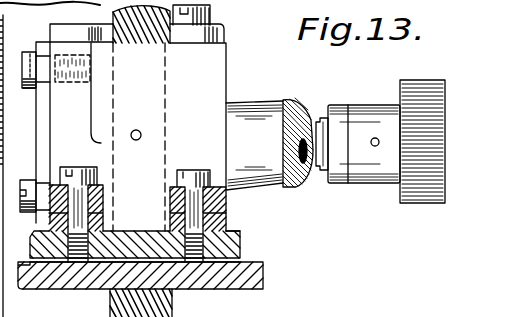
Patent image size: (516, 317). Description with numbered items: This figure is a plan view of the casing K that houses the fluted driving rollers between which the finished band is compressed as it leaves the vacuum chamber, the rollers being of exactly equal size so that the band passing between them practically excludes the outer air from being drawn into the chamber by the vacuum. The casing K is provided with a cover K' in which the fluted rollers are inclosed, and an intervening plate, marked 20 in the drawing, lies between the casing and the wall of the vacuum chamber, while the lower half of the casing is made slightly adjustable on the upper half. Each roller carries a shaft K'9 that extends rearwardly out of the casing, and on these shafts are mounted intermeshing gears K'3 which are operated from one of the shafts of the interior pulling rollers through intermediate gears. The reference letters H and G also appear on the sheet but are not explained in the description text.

The casing K is at (128, 127).
The cover K' is at (24, 132).
The slide strip 20 is at (32, 133).
The base plate H is at (0, 228).
The shaft K'9 is at (281, 128).
The intermeshing gear K'3 is at (421, 127).
The coil spring G is at (165, 161).